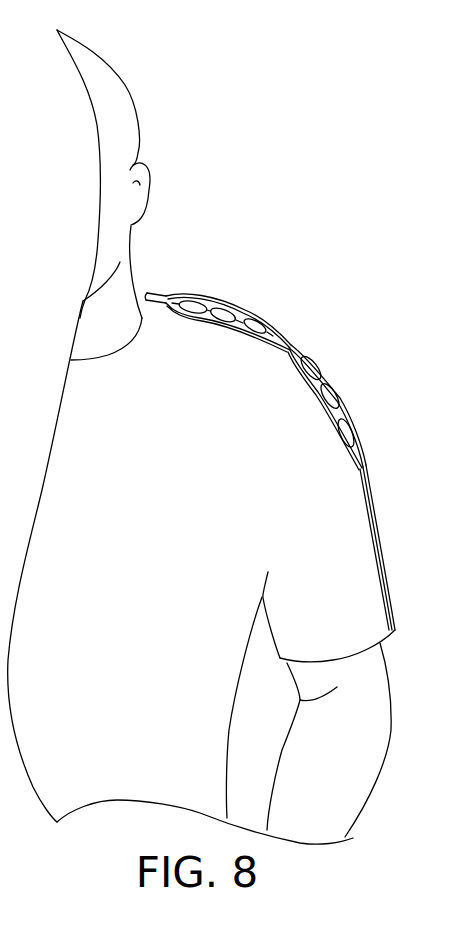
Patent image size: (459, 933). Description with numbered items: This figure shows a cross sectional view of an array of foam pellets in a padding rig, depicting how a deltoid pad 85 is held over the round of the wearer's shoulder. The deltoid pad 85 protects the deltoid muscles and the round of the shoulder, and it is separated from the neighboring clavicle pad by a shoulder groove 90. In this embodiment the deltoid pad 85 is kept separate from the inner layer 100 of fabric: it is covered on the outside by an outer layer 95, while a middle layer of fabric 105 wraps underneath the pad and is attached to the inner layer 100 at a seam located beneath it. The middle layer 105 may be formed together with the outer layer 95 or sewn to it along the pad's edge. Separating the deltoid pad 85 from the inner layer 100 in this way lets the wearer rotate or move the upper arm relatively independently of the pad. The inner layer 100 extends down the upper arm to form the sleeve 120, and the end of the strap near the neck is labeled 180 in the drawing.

The deltoid pad 85 is at (259, 448).
The shoulder groove 90 is at (259, 417).
The outer layer 95 is at (267, 323).
The inner layer 100 is at (263, 337).
The middle layer of fabric 105 is at (337, 427).
The sleeve 120 is at (337, 602).
The strap end connector 180 is at (163, 303).